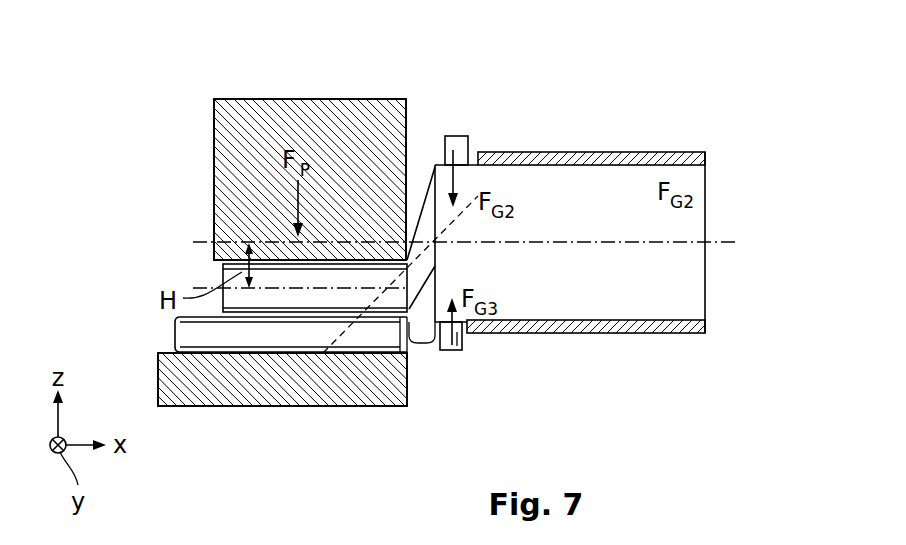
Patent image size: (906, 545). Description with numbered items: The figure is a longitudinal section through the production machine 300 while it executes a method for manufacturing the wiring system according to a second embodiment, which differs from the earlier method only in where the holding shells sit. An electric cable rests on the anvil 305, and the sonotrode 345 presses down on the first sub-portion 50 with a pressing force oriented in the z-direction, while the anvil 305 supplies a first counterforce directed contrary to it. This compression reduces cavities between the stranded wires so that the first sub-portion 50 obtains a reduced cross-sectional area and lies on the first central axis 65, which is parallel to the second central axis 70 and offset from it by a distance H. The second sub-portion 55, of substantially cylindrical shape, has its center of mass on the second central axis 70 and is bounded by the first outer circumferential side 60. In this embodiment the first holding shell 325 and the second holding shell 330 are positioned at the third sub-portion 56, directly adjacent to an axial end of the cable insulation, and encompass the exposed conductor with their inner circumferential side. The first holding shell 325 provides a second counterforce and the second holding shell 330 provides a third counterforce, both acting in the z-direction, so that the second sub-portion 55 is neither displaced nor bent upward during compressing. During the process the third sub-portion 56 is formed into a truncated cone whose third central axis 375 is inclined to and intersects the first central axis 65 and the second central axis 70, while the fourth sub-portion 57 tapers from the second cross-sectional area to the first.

The production machine 300 is at (696, 393).
The anvil 305 is at (180, 398).
The first holding shell 325 is at (462, 158).
The second holding shell 330 is at (460, 340).
The sonotrode 345 is at (287, 112).
The third central axis 375 is at (474, 198).
The first sub-portion 50 is at (224, 410).
The second sub-portion 55 is at (604, 187).
The third sub-portion 56 is at (468, 247).
The fourth sub-portion 57 is at (420, 345).
The first outer circumferential side 60 is at (478, 95).
The first central axis 65 is at (202, 287).
The second central axis 70 is at (527, 240).